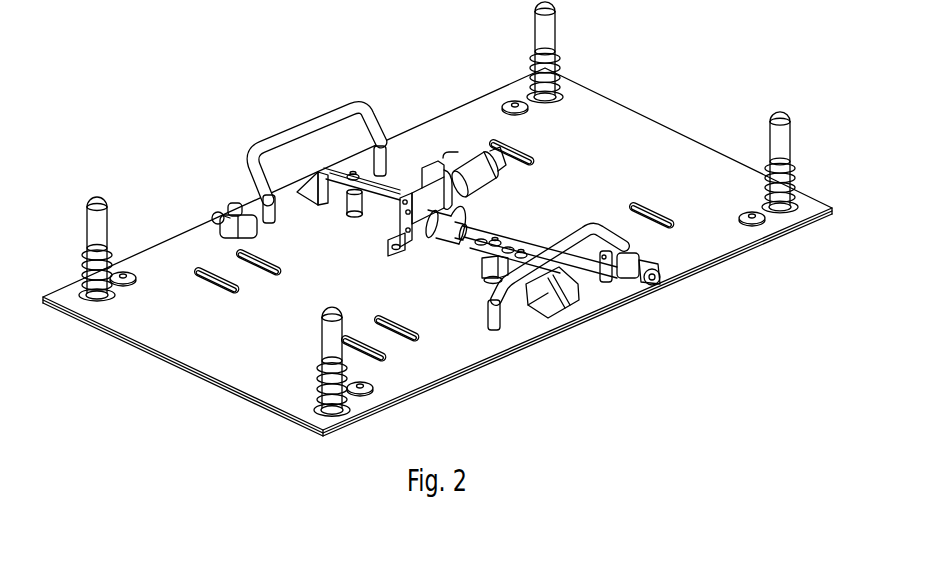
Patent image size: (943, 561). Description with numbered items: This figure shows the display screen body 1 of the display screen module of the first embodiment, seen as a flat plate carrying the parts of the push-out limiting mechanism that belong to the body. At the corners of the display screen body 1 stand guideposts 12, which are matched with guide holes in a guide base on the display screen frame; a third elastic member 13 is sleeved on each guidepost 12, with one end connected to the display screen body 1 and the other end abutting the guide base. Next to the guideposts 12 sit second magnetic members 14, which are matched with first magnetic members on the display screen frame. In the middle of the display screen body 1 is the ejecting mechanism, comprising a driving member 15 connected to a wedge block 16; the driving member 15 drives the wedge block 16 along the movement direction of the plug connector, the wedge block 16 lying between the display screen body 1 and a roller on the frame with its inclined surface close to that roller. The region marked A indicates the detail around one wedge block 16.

The display screen body 1 is at (150, 164).
The guidepost 12 is at (261, 366).
The third elastic member 13 is at (577, 52).
The second magnetic member 14 is at (437, 268).
The driving member 15 is at (449, 119).
The wedge block 16 is at (414, 229).
The detail region A (clamp) A is at (672, 291).